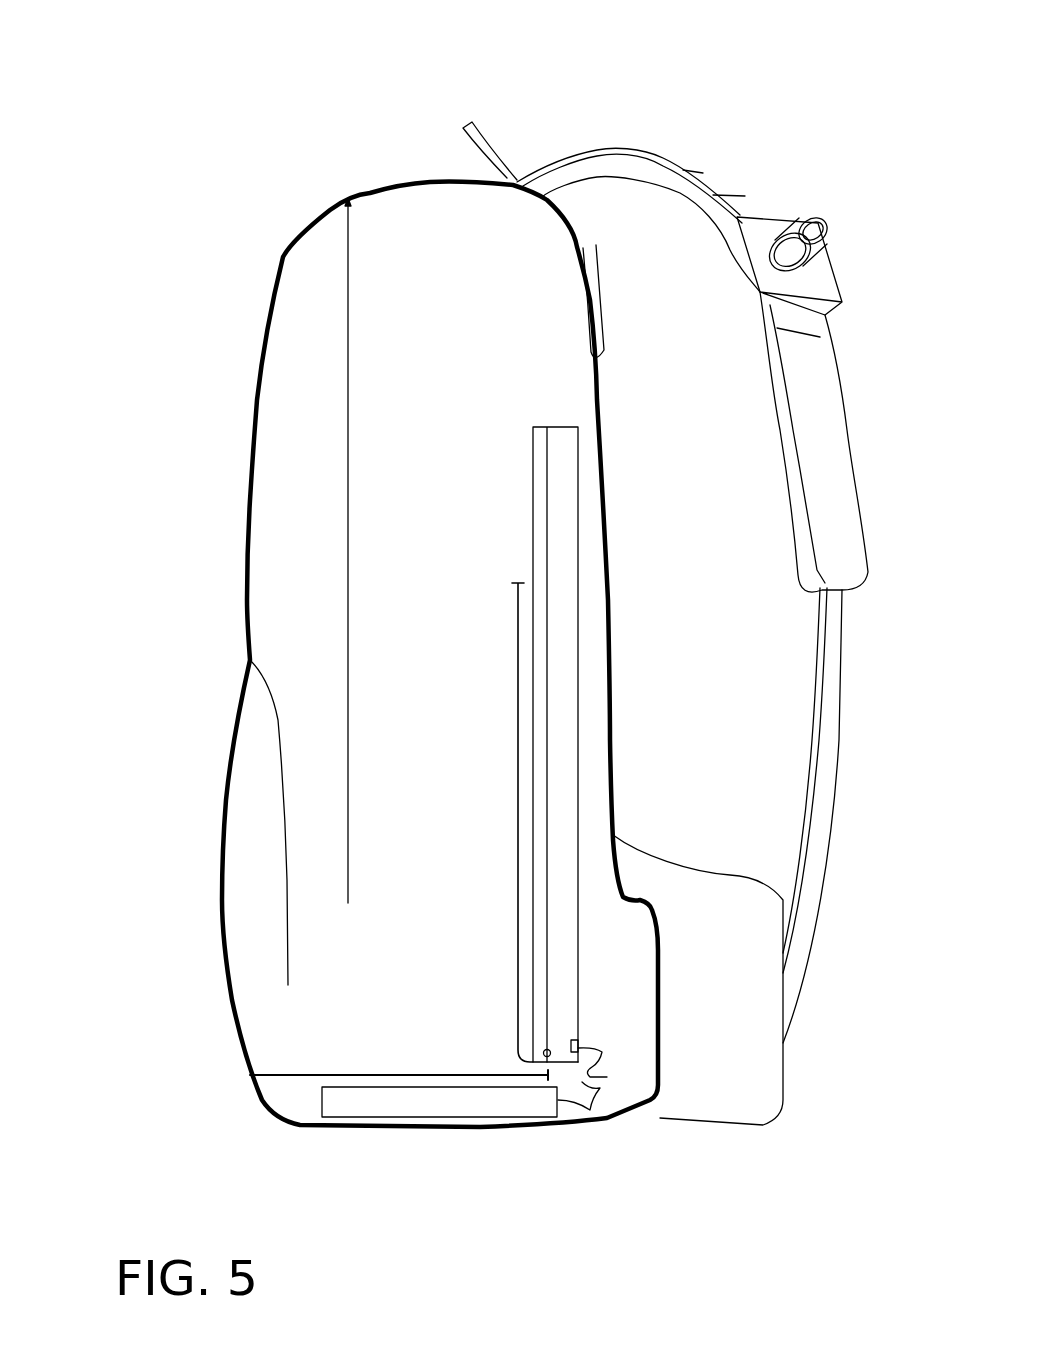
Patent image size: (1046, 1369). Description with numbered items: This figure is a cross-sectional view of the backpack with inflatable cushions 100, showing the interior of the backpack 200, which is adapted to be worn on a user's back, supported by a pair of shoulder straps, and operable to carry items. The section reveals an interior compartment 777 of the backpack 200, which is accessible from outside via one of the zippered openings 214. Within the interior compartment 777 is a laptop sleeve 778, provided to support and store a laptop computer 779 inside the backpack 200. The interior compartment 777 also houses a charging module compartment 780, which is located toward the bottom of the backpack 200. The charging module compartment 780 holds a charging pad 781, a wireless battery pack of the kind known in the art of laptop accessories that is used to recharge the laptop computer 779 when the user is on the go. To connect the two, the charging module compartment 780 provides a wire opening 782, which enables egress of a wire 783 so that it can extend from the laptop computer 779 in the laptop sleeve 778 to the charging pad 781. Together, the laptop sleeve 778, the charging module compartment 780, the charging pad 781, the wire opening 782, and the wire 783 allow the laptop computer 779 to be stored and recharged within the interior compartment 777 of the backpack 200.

The backpack with inflatable cushions 100 is at (198, 137).
The backpack 200 is at (430, 182).
The interior compartment 777 is at (443, 382).
The zippered opening 214 is at (347, 495).
The laptop sleeve 778 is at (518, 617).
The laptop computer 779 is at (568, 527).
The charging module compartment 780 is at (355, 1074).
The charging pad 781 is at (337, 1103).
The wire opening 782 is at (528, 1063).
The wire 783 is at (588, 1110).